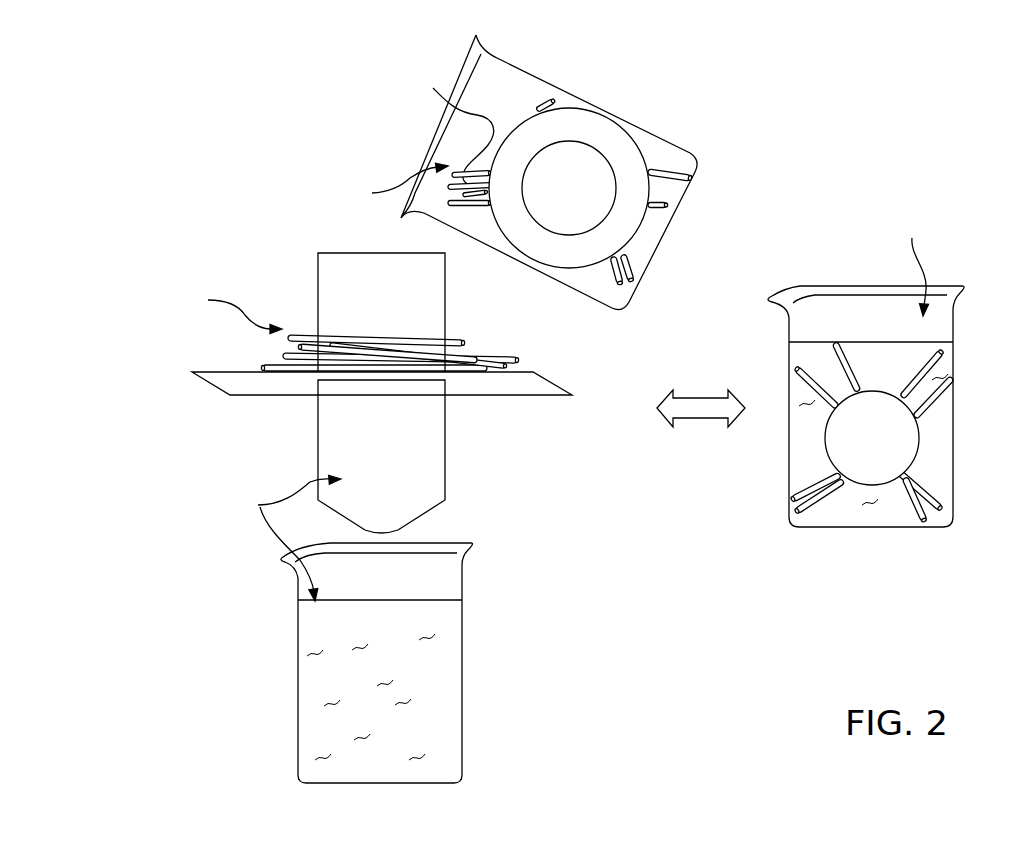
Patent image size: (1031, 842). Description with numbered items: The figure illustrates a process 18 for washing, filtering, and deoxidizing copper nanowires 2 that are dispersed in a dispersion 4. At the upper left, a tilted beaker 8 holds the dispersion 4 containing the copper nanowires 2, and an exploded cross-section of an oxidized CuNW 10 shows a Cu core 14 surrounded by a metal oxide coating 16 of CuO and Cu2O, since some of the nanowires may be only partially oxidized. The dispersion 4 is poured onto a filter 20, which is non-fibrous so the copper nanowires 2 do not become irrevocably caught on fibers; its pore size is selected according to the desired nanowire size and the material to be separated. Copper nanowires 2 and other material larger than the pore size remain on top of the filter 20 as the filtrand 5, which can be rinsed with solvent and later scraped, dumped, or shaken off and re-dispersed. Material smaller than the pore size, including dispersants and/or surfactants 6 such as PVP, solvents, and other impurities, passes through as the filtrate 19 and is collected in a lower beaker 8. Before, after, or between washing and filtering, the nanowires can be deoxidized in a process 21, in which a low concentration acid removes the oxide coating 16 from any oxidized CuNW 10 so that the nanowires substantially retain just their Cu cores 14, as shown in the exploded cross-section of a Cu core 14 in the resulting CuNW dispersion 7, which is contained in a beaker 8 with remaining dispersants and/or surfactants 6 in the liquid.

The copper nanowires 2 is at (667, 168).
The dispersion 4 is at (401, 183).
The filtrand 5 is at (237, 313).
The dispersants and/or surfactants 6 is at (622, 153).
The CuNW dispersion 7 is at (919, 266).
The beaker 8 is at (513, 63).
The oxidized CuNW 10 is at (593, 112).
The Cu core 14 is at (590, 192).
The metal oxide coating 16 is at (453, 130).
The process 18 is at (202, 102).
The filtrate 19 is at (289, 538).
The filter 20 is at (517, 385).
The deoxidation process 21 is at (847, 258).